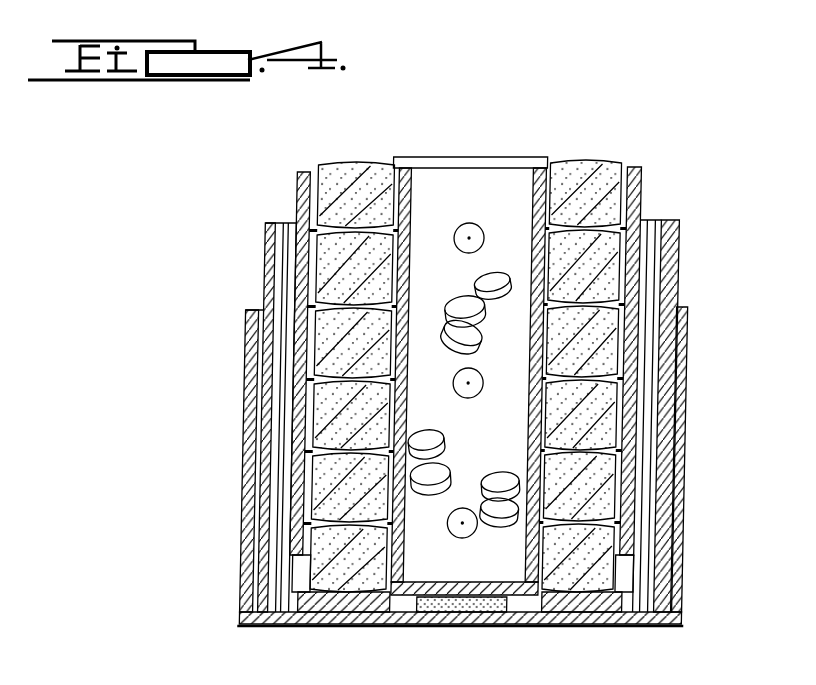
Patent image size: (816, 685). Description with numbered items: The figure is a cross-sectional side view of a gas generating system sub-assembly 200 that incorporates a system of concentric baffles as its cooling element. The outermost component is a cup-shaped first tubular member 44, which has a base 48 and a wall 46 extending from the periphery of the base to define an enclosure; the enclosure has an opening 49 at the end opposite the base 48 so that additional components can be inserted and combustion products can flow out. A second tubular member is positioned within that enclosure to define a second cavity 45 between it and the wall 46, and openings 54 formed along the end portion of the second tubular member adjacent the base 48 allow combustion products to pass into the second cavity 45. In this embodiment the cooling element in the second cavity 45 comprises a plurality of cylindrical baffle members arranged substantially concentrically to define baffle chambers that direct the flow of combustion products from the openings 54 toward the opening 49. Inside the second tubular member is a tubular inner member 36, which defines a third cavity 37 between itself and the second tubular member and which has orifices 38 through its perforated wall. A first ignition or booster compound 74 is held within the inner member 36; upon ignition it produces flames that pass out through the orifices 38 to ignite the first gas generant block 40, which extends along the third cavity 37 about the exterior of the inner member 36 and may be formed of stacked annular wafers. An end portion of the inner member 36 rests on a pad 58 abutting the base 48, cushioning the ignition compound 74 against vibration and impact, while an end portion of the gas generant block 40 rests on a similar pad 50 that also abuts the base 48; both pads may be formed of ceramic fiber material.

The sub-assembly 200 is at (532, 88).
The first gas generant block 40 is at (353, 187).
The third cavity 37 is at (587, 193).
The opening 49 is at (253, 310).
The wall 46 is at (248, 352).
The first tubular member 44 is at (243, 412).
The second cavity 45 is at (686, 408).
The first ignition compound 74 is at (488, 273).
The orifices 38 is at (473, 397).
The openings 54 is at (295, 572).
The tubular inner member 36 is at (420, 545).
The pad 58 is at (433, 605).
The pad 50 is at (557, 603).
The base 48 is at (605, 618).